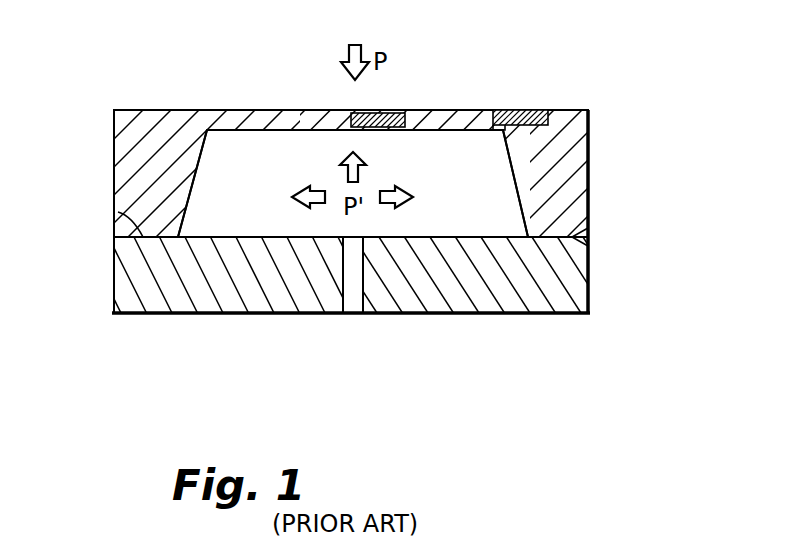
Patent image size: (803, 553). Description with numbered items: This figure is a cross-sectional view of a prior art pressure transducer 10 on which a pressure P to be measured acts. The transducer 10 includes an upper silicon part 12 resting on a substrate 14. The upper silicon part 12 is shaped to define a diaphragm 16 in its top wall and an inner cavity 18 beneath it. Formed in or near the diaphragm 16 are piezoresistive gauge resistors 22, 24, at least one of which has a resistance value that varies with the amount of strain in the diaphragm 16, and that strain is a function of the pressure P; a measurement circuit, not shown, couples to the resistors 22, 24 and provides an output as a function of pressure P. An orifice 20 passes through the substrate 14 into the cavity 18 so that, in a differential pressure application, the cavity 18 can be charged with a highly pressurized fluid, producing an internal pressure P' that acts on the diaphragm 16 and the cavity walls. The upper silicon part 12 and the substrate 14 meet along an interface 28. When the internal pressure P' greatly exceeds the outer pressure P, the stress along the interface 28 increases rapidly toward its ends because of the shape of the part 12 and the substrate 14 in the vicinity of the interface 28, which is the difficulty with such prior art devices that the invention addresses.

The pressure transducer 10 is at (205, 82).
The upper silicon part 12 is at (590, 166).
The substrate 14 is at (590, 283).
The diaphragm 16 is at (283, 112).
The inner cavity 18 is at (243, 216).
The orifice 20 is at (352, 302).
The piezoresistive gauge resistor 22 is at (385, 112).
The piezoresistive gauge resistor 24 is at (528, 112).
The interface 28 is at (143, 237).